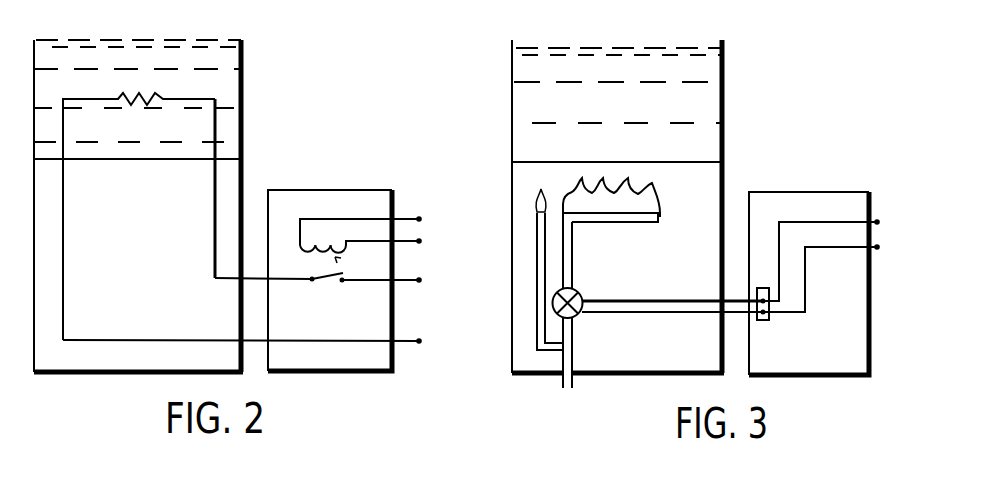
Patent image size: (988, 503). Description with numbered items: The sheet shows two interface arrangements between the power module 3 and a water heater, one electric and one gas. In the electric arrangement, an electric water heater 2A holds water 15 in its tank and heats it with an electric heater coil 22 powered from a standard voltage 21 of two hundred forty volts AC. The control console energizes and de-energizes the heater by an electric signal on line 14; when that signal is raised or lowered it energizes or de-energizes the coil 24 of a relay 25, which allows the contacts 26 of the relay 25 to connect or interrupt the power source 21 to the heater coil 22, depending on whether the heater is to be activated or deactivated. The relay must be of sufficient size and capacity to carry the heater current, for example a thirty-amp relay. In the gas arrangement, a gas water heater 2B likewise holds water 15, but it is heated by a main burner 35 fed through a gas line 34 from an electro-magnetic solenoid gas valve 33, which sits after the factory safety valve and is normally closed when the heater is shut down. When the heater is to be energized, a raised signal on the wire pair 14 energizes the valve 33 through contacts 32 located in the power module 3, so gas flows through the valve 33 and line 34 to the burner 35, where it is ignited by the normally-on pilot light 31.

In FIG. 2, the electric water heater 2A is at (243, 183).
In FIG. 3, the gas water heater 2B is at (725, 165).
In FIG. 2, the power module 3 is at (362, 190).
In FIG. 3, the power module 3 is at (837, 192).
In FIG. 2, the line 14 is at (422, 208).
In FIG. 3, the line 14 is at (880, 210).
In FIG. 2, the water 15 is at (230, 127).
In FIG. 3, the water 15 is at (713, 74).
In FIG. 2, the standard voltage power source 21 is at (450, 283).
In FIG. 2, the electric heater coil 22 is at (163, 98).
In FIG. 2, the coil of relay 24 is at (335, 240).
In FIG. 2, the relay 25 is at (335, 257).
In FIG. 2, the contacts of relay 26 is at (324, 283).
In FIG. 3, the pilot light 31 is at (532, 210).
In FIG. 3, the contacts 32 is at (764, 321).
In FIG. 3, the electro-magnetic solenoid gas valve 33 is at (577, 313).
In FIG. 3, the gas line 34 is at (571, 288).
In FIG. 3, the main burner 35 is at (565, 202).